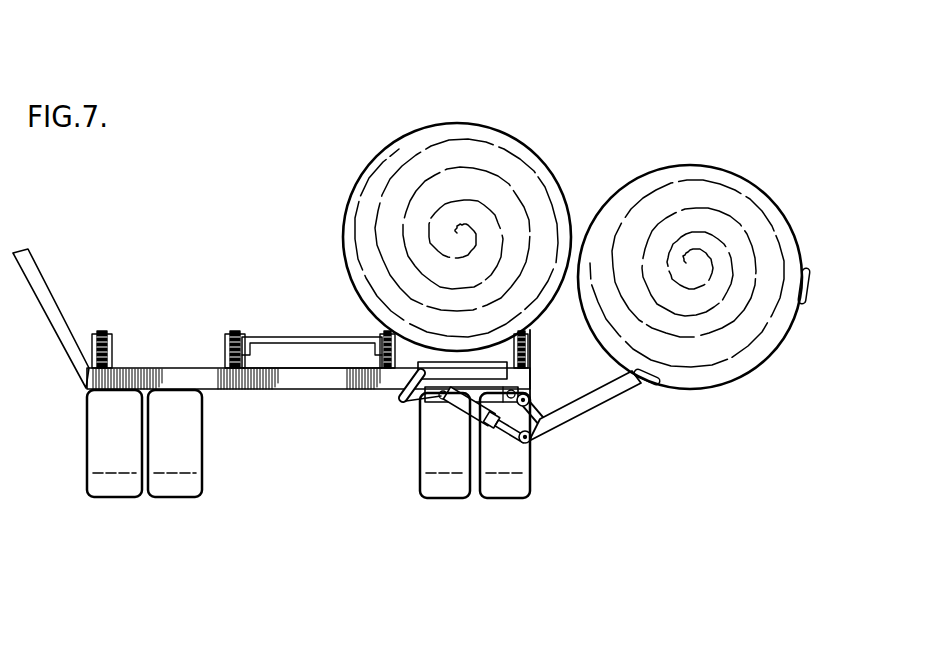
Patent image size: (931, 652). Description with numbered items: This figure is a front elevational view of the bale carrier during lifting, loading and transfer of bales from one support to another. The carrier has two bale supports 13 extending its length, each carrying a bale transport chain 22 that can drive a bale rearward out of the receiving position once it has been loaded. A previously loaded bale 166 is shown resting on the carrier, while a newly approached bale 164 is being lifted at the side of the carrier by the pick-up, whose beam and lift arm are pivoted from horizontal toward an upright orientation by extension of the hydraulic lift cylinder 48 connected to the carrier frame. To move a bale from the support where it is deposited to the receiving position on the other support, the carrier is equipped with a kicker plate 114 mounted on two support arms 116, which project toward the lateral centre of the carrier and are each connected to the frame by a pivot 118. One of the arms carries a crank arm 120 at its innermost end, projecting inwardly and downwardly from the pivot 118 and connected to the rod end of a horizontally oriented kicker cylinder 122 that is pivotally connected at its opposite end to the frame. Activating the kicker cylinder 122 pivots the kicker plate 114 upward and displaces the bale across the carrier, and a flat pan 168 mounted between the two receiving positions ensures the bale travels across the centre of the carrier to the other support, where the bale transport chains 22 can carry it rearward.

The bale support 13 is at (427, 336).
The bale transport chain 22 is at (388, 333).
The hydraulic lift cylinder 48 is at (462, 400).
The kicker plate 114 is at (487, 362).
The support arm 116 is at (446, 402).
The pivot 118 is at (397, 398).
The crank arm 120 is at (405, 388).
The kicker cylinder 122 is at (496, 404).
The bale 164 is at (717, 165).
The bale 166 is at (512, 135).
The flat pan 168 is at (265, 337).